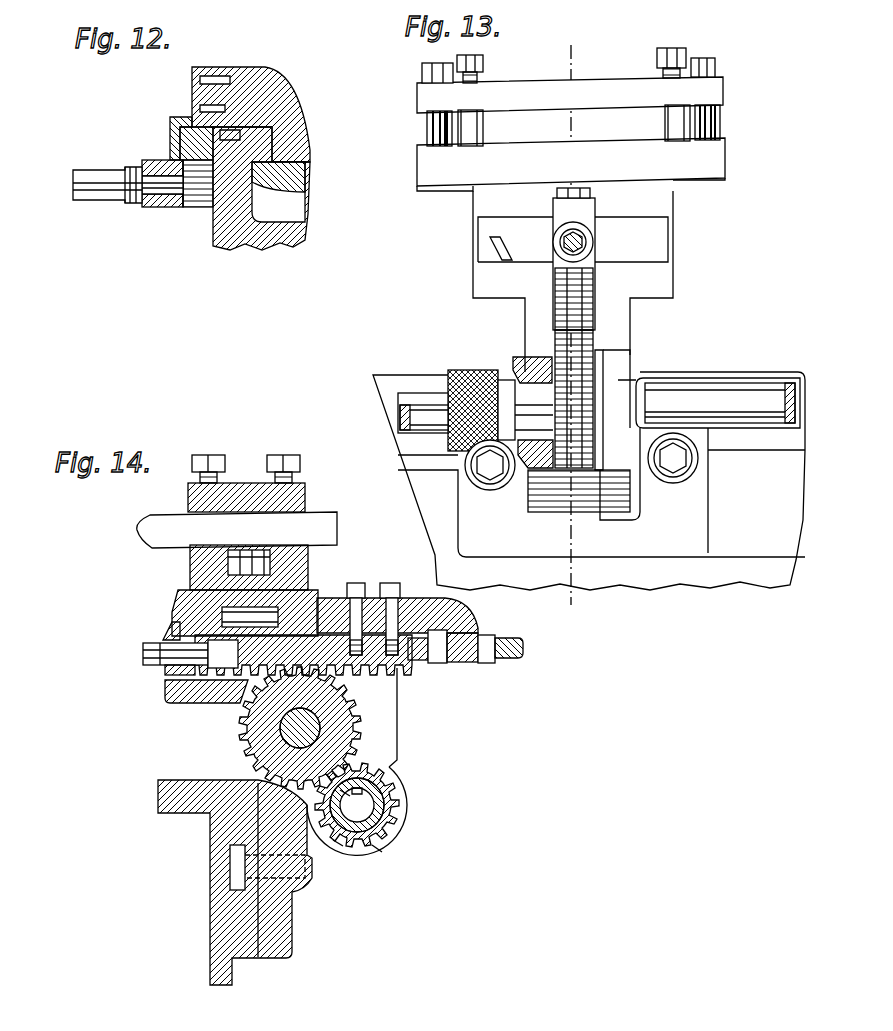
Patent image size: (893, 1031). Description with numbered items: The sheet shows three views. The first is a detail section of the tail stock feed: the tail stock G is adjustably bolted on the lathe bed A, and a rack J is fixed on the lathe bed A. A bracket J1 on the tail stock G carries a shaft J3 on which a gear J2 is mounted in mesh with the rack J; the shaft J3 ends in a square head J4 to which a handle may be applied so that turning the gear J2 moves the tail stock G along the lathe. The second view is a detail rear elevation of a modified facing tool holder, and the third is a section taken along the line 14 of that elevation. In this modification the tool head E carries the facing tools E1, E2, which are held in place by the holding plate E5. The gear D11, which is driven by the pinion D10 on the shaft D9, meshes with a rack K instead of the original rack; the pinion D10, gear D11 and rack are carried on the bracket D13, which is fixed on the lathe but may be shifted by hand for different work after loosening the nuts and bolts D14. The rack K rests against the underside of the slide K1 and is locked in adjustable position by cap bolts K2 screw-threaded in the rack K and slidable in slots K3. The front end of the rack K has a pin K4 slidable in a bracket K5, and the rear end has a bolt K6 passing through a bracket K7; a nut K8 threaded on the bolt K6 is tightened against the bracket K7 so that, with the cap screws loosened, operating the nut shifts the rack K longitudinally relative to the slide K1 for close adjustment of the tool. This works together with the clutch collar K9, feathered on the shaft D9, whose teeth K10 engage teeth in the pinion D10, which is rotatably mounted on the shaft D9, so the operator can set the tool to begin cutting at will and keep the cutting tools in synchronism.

In FIG. 12, the tail stock G is at (280, 98).
In FIG. 12, the lathe bed A is at (253, 237).
In FIG. 13, the lathe bed A is at (757, 572).
In FIG. 14, the lathe bed A is at (222, 918).
In FIG. 12, the rack J is at (172, 133).
In FIG. 12, the bracket J1 is at (170, 107).
In FIG. 12, the gear J2 is at (198, 208).
In FIG. 12, the shaft J3 is at (157, 195).
In FIG. 12, the square head J4 is at (88, 195).
In FIG. 13, the section line 14— 14 is at (568, 52).
In FIG. 13, the tool head E is at (718, 153).
In FIG. 14, the tool head E is at (197, 562).
In FIG. 13, the facing tool E1 is at (477, 127).
In FIG. 13, the facing tool E2 is at (672, 122).
In FIG. 14, the facing tool E2 is at (170, 523).
In FIG. 13, the holding plate E5 is at (717, 86).
In FIG. 14, the holding plate E5 is at (268, 470).
In FIG. 13, the rack K is at (590, 263).
In FIG. 14, the rack K is at (367, 672).
In FIG. 13, the slide K1 is at (487, 229).
In FIG. 14, the slide K1 is at (178, 598).
In FIG. 14, the cap bolt K2 is at (397, 617).
In FIG. 14, the slot K3 is at (340, 615).
In FIG. 14, the pin K4 is at (150, 652).
In FIG. 14, the bracket K5 is at (172, 628).
In FIG. 13, the bolt K6 is at (562, 244).
In FIG. 14, the bolt K6 is at (518, 660).
In FIG. 13, the bracket K7 is at (560, 226).
In FIG. 14, the bracket K7 is at (463, 667).
In FIG. 14, the nut K8 is at (436, 665).
In FIG. 13, the clutch collar K9 is at (583, 243).
In FIG. 14, the clutch collar K9 is at (492, 663).
In FIG. 13, the teeth K10 is at (506, 372).
In FIG. 14, the teeth K10 is at (372, 850).
In FIG. 13, the shaft D9 is at (743, 390).
In FIG. 14, the shaft D9 is at (372, 805).
In FIG. 13, the pinion D10 is at (605, 382).
In FIG. 14, the pinion D10 is at (405, 790).
In FIG. 13, the gear D11 is at (590, 305).
In FIG. 14, the gear D11 is at (240, 750).
In FIG. 13, the bracket D13 is at (533, 322).
In FIG. 14, the bracket D13 is at (175, 693).
In FIG. 13, the nuts and bolts D14 is at (490, 476).